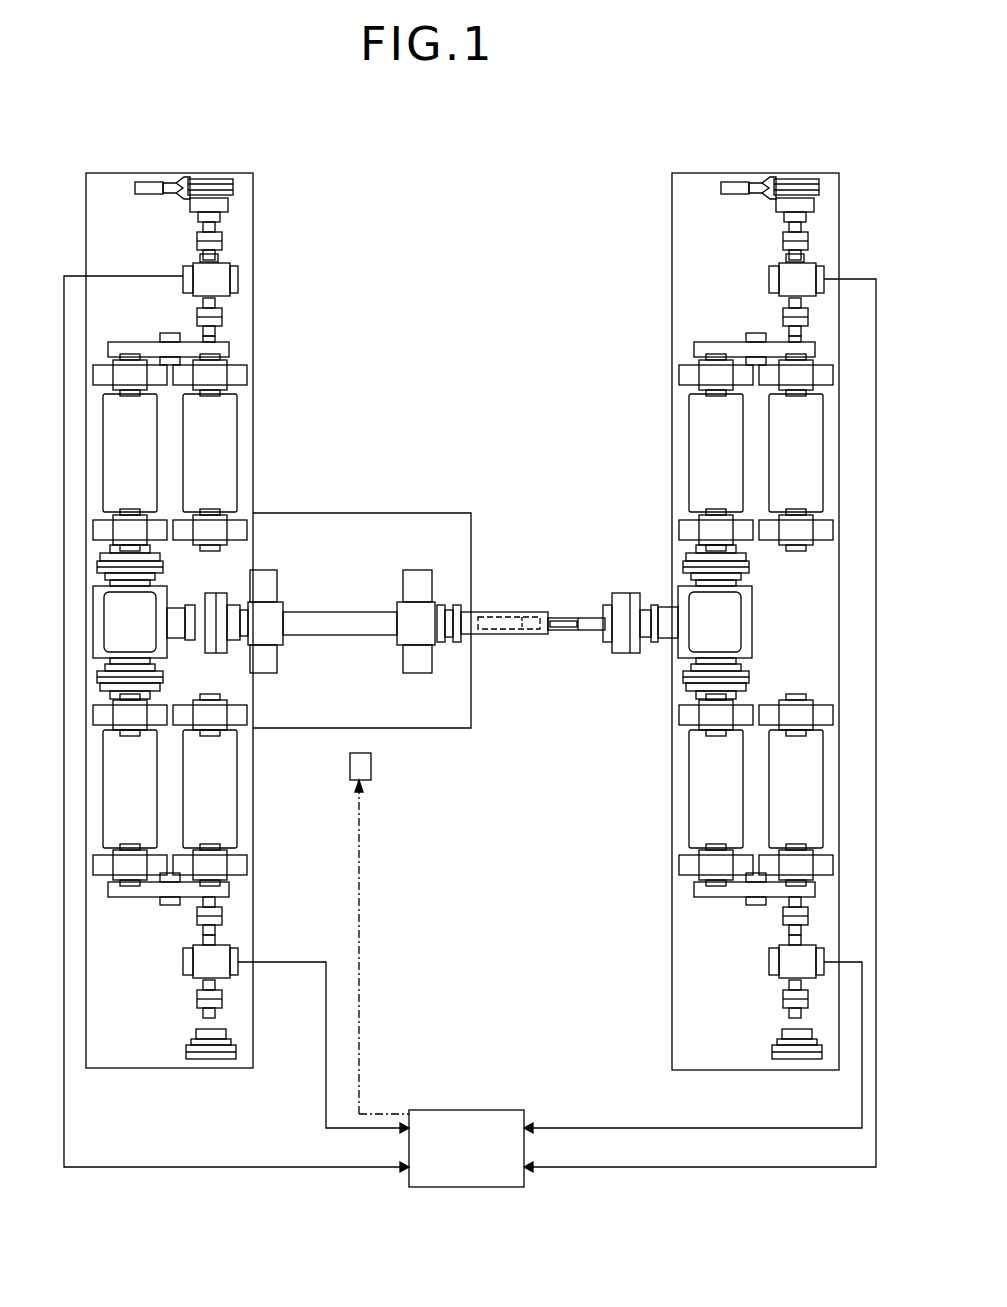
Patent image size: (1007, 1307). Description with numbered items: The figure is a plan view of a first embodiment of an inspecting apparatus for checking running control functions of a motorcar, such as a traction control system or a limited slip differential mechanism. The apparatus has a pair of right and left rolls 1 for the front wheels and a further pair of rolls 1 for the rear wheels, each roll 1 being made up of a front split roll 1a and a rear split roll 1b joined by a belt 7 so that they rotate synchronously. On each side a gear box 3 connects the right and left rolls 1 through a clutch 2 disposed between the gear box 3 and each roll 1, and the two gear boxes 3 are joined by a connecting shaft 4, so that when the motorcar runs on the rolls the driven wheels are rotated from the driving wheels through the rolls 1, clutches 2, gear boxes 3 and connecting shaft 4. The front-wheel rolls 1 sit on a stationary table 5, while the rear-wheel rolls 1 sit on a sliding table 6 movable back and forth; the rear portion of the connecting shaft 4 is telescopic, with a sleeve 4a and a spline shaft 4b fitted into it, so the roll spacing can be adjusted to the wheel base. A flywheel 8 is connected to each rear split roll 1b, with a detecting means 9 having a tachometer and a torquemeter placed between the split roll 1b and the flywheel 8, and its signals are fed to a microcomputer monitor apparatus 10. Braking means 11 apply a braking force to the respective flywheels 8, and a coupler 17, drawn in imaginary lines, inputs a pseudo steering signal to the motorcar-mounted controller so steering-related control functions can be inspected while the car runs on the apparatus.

The rolls 1 is at (246, 420).
The front split roll 1a is at (145, 457).
The rear split roll 1b is at (222, 497).
The clutch 2 is at (163, 557).
The gear box 3 is at (786, 618).
The connecting shaft 4 is at (356, 632).
The sleeve 4a is at (508, 636).
The spline shaft 4b is at (565, 632).
The stationary table 5 is at (388, 527).
The sliding table 6 is at (685, 306).
The belt 7 is at (133, 350).
The flywheel 8 is at (209, 180).
The detecting means 9 is at (222, 279).
The monitor apparatus 10 is at (465, 1110).
The braking means 11 is at (768, 185).
The coupler 17 is at (372, 768).